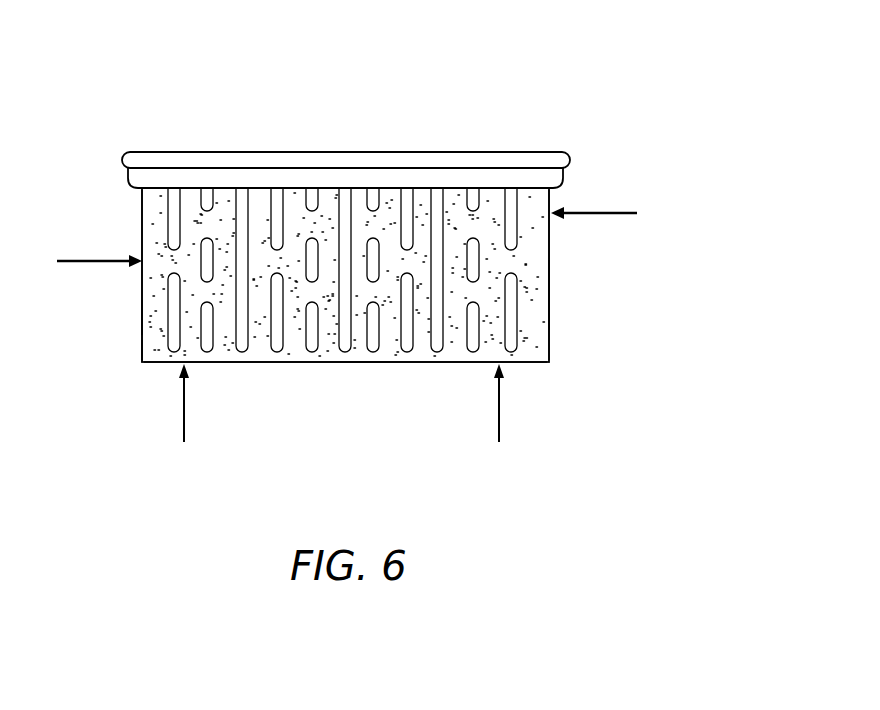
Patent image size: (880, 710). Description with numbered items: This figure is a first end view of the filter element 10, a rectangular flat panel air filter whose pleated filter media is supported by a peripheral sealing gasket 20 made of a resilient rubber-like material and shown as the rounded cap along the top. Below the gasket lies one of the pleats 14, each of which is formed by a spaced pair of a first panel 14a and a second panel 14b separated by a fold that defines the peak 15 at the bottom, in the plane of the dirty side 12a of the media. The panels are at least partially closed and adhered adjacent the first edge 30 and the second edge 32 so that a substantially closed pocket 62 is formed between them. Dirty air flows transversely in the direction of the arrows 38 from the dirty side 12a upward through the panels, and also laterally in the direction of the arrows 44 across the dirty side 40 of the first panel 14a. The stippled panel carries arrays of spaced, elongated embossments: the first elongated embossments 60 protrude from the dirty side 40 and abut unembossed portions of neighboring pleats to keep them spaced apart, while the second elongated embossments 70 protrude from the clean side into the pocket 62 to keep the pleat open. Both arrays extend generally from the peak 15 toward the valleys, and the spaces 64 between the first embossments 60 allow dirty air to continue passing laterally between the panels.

The filter element 10 is at (556, 62).
The dirty side 12a is at (540, 340).
The pleats 14 is at (134, 281).
The first panel 14a is at (535, 247).
The second panel 14b is at (139, 218).
The peak 15 is at (363, 362).
The peripheral sealing gasket 20 is at (160, 151).
The first edge 30 is at (146, 318).
The second edge 32 is at (552, 310).
The air flow arrows 38 is at (184, 425).
The dirty side of first panel 40 is at (540, 278).
The lateral air flow arrows 44 is at (617, 213).
The first elongated embossments 60 is at (344, 352).
The pockets 62 is at (142, 350).
The spaces between first embossments 64 is at (408, 261).
The second elongated embossments 70 is at (176, 205).